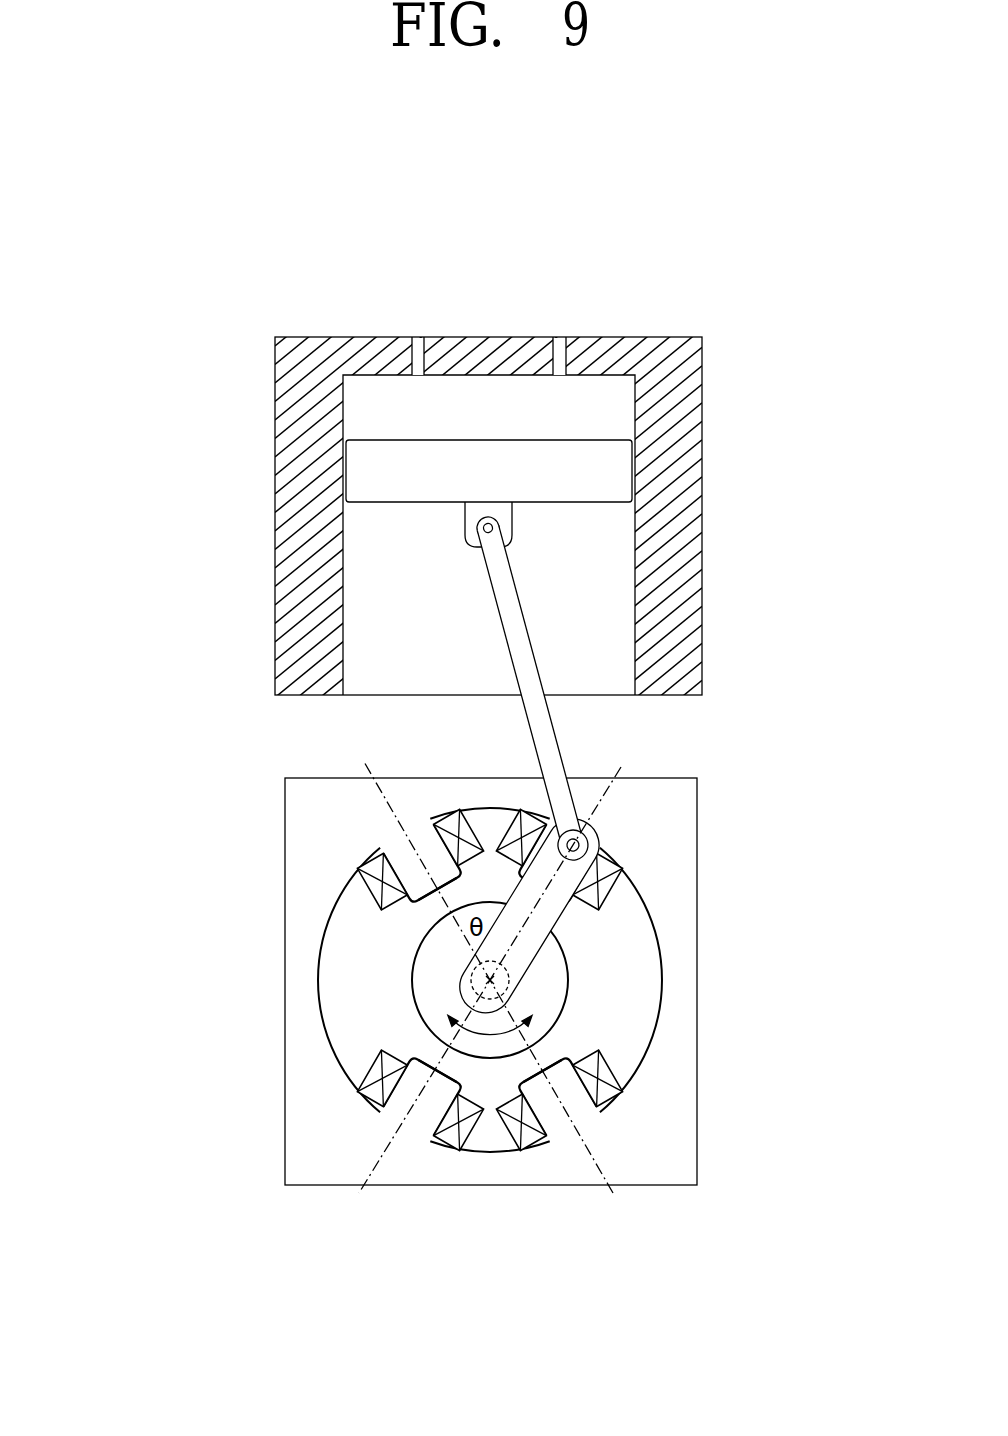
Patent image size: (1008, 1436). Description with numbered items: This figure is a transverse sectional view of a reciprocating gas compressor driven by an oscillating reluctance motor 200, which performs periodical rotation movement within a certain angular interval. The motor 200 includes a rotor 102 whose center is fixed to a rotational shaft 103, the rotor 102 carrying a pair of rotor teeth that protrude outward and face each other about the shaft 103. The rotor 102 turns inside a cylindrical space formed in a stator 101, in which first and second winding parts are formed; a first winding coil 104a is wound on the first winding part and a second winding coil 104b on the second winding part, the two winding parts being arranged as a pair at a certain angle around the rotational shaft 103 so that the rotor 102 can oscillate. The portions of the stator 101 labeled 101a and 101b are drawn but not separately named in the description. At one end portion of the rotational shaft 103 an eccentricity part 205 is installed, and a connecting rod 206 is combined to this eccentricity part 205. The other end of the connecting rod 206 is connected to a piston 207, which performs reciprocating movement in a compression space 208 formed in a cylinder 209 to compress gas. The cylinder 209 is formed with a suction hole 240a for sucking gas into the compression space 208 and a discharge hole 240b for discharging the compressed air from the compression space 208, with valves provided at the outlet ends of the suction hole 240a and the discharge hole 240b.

The oscillating reluctance motor 200 is at (707, 837).
The stator 101 is at (320, 973).
The pole face 101a is at (572, 1087).
The stator pole tooth 101b is at (422, 1113).
The rotor 102 is at (430, 980).
The rotational shaft 103 is at (478, 964).
The first winding coil 104a is at (603, 1063).
The second winding coil 104b is at (463, 1123).
The eccentricity part 205 is at (542, 908).
The connecting rod 206 is at (527, 675).
The piston 207 is at (365, 458).
The compression space 208 is at (360, 400).
The cylinder 209 is at (303, 593).
The suction hole 240a is at (418, 355).
The discharge hole 240b is at (558, 355).